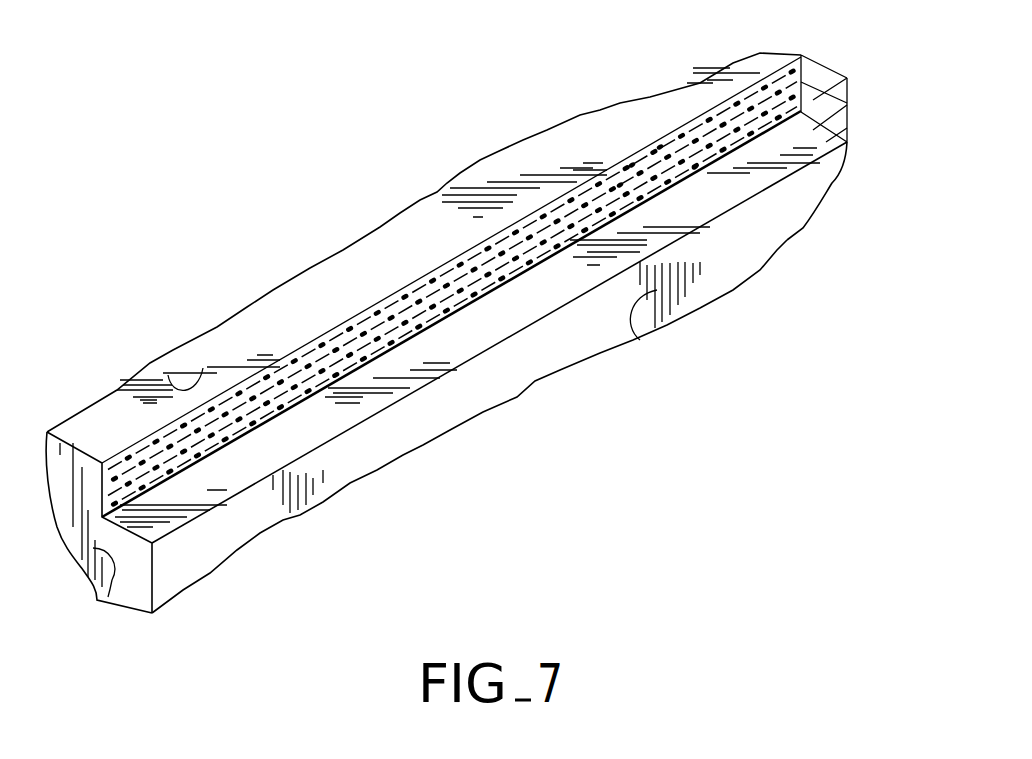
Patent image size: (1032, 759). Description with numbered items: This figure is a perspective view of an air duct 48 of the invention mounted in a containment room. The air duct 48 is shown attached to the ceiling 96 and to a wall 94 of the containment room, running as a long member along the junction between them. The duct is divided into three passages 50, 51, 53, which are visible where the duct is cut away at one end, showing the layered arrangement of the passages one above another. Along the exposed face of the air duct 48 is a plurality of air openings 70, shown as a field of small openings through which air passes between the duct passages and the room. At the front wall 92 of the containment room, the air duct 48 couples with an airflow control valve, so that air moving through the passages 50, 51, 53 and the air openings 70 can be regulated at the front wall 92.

The air duct 48 is at (373, 380).
The passage 50 is at (812, 75).
The passage 51 is at (823, 90).
The passage 53 is at (812, 110).
The air openings 70 is at (695, 167).
The front wall 92 is at (108, 597).
The wall 94 is at (640, 340).
The ceiling 96 is at (203, 368).